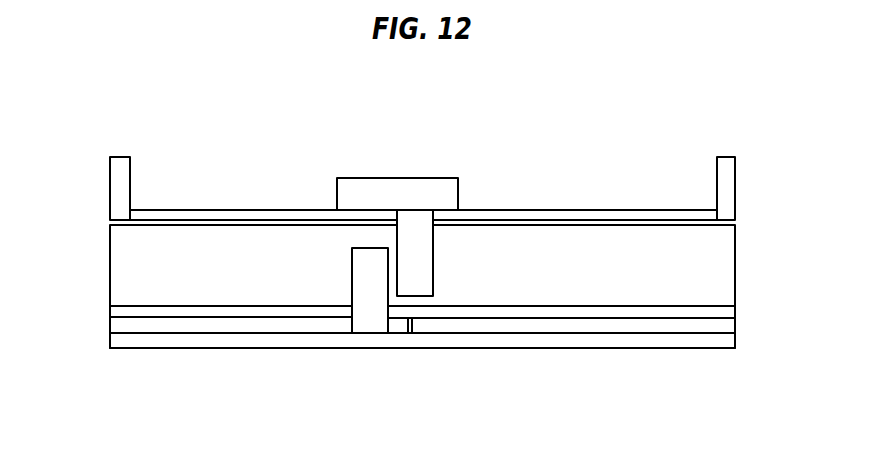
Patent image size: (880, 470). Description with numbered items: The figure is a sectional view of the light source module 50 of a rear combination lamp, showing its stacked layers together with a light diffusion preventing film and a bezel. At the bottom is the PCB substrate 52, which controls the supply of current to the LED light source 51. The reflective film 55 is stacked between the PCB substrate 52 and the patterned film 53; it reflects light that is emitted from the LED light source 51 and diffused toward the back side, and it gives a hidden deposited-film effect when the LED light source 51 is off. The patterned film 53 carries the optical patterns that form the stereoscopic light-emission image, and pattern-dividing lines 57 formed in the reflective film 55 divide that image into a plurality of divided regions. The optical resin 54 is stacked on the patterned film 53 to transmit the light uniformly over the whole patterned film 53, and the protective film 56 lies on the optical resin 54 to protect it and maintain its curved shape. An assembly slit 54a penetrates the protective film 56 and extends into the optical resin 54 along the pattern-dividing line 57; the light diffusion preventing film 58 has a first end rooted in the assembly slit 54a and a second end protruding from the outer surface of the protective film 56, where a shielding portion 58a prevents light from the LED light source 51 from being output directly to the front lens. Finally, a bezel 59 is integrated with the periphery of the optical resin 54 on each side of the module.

The light source module 50 is at (403, 184).
The LED light source 51 is at (356, 292).
The PCB substrate 52 is at (665, 340).
The patterned film 53 is at (693, 312).
The optical resin 54 is at (565, 237).
The assembly slit 54a is at (430, 272).
The reflective film 55 is at (560, 325).
The protective film 56 is at (213, 217).
The pattern-dividing line 57 is at (413, 324).
The light diffusion preventing film 58 is at (403, 199).
The shielding portion 58a is at (352, 193).
The bezel 59 is at (118, 190).